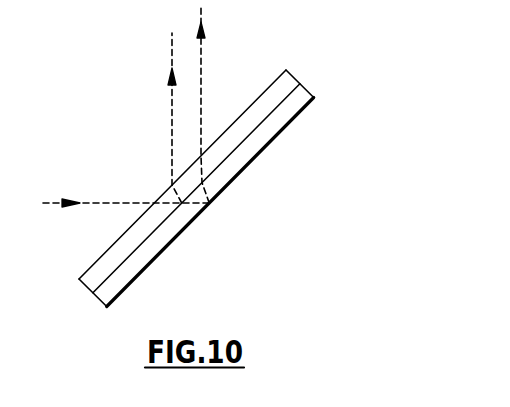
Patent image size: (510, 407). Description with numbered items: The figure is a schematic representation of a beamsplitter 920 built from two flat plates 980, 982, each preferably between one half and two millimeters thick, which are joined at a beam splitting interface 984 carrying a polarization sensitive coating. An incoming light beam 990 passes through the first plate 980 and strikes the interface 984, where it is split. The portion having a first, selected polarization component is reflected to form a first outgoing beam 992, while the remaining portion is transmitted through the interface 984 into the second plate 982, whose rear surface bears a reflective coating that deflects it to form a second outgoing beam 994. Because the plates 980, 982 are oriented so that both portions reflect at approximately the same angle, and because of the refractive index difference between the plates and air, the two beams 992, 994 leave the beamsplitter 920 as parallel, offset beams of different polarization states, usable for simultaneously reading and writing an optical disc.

The beamsplitter 920 is at (207, 189).
The first flat plate 980 is at (289, 72).
The second flat plate 982 is at (309, 93).
The beam splitting interface 984 is at (97, 283).
The incoming light beam 990 is at (118, 202).
The first outgoing beam 992 is at (172, 53).
The second outgoing beam 994 is at (201, 15).